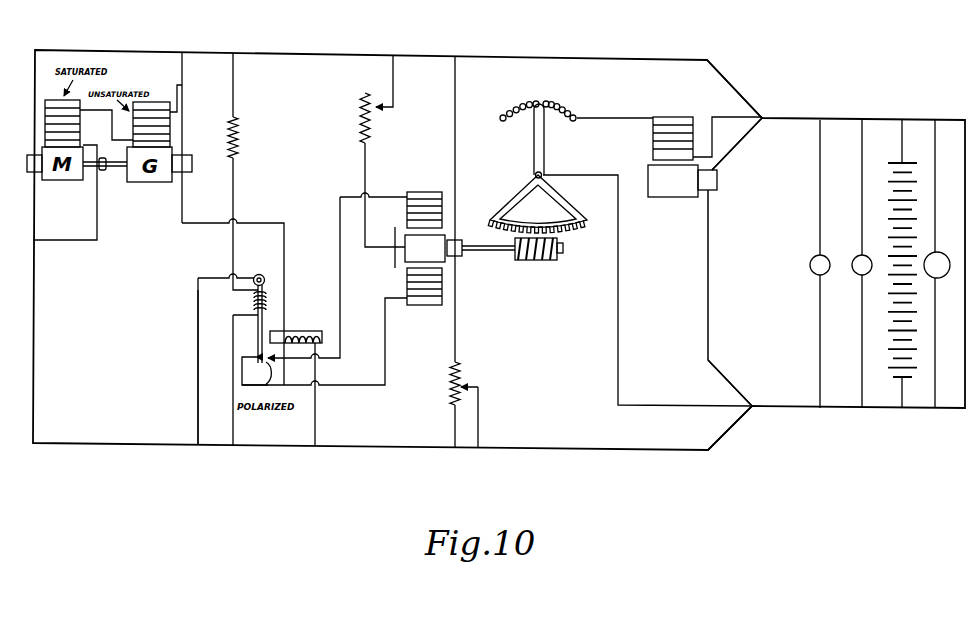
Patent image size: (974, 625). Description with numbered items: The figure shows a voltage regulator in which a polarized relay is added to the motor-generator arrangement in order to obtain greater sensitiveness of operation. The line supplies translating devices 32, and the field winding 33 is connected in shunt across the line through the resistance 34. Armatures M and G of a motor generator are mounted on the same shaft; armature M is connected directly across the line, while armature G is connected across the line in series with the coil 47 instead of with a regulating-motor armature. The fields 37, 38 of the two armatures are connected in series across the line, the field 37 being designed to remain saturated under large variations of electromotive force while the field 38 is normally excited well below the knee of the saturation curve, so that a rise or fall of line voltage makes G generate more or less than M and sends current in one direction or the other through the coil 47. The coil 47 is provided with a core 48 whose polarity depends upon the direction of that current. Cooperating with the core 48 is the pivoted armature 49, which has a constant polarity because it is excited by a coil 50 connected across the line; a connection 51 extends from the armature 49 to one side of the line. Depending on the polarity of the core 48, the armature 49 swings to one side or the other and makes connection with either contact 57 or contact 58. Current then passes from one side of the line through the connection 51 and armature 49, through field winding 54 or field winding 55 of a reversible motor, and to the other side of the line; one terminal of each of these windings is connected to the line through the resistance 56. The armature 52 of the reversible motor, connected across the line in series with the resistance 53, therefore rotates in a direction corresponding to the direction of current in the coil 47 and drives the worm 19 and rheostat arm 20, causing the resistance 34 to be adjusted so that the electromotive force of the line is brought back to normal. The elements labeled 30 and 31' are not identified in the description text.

The worm 19 is at (539, 261).
The rheostat arm 20 is at (537, 168).
The relay 30 is at (682, 181).
The supply conductors 31' is at (751, 255).
The translating devices 32 is at (824, 273).
The field winding 33 is at (661, 138).
The resistance 34 is at (538, 104).
The field 37 is at (75, 123).
The field 38 is at (142, 124).
The coil 47 is at (300, 329).
The core 48 is at (322, 338).
The pivoted armature 49 is at (258, 337).
The coil 50 is at (253, 304).
The connection 51 is at (191, 367).
The armature 52 is at (433, 248).
The resistance 53 is at (444, 383).
The field winding 54 is at (412, 210).
The field winding 55 is at (413, 286).
The resistance 56 is at (354, 118).
The contact 57 is at (270, 359).
The contact 58 is at (256, 371).